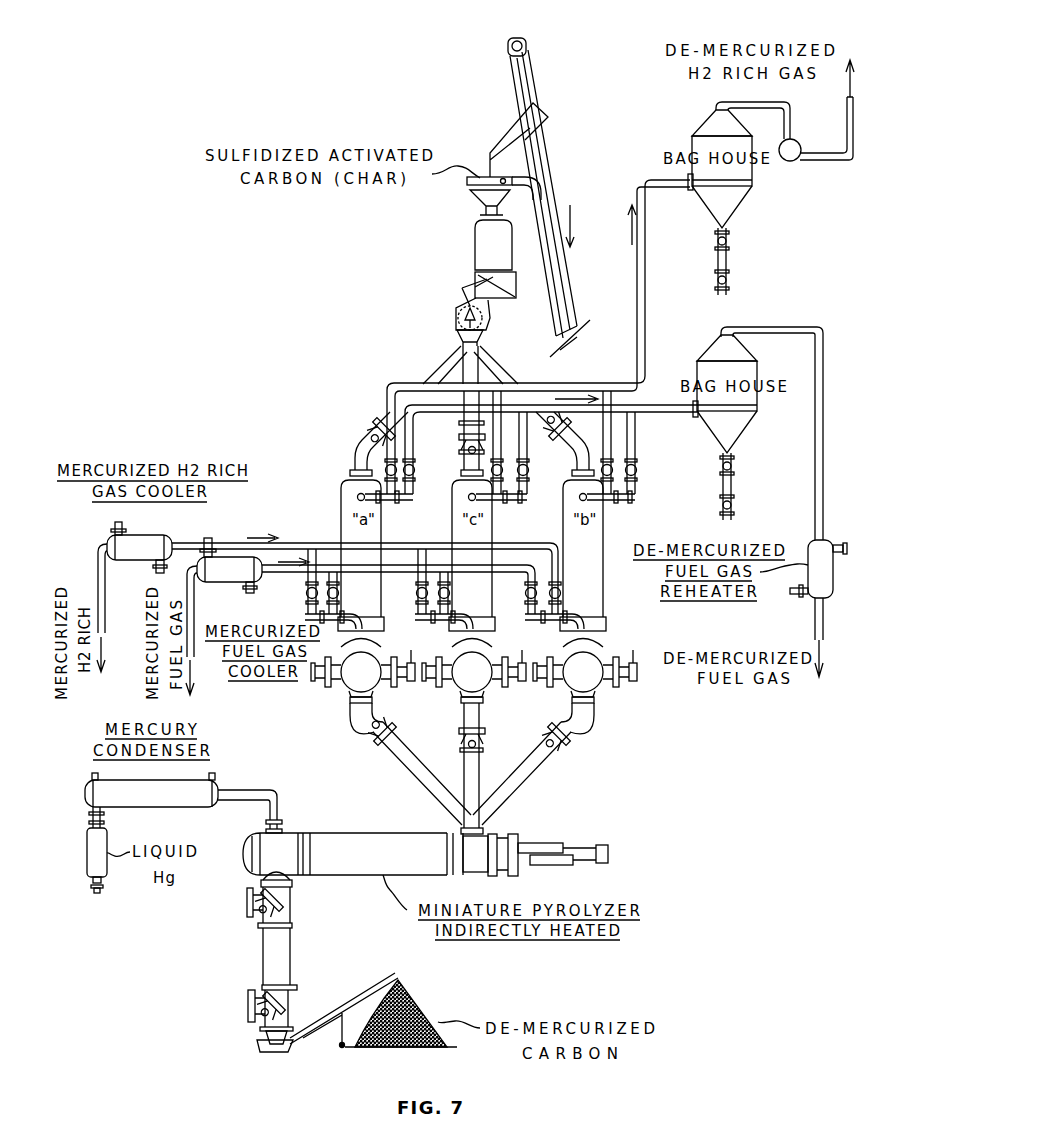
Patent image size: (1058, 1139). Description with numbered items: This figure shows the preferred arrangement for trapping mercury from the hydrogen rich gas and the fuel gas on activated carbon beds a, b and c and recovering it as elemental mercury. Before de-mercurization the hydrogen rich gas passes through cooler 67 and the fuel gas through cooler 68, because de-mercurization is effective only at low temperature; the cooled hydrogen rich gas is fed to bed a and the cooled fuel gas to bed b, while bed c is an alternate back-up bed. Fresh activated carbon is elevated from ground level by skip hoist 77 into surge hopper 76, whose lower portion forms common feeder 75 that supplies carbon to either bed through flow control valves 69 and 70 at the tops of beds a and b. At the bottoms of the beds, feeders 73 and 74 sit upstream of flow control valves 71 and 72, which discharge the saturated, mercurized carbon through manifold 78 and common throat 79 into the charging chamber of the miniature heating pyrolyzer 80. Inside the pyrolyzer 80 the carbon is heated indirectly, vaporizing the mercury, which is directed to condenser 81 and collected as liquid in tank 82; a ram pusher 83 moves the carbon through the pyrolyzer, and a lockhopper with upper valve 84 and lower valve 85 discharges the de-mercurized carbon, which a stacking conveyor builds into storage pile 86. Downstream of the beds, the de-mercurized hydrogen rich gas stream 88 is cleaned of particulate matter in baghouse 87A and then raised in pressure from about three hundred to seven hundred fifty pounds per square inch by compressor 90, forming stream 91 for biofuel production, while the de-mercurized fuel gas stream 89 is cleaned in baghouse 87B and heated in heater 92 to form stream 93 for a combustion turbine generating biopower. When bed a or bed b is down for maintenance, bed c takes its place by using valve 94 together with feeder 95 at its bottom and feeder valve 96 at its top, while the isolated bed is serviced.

The cooler 67 is at (107, 541).
The cooler 68 is at (203, 582).
The flow control valve 69 is at (364, 432).
The flow control valve 70 is at (552, 448).
The flow control valve 71 is at (380, 748).
The flow control valve 72 is at (566, 742).
The feeder 73 is at (350, 682).
The feeder 74 is at (590, 681).
The common feeder 75 is at (457, 319).
The surge hopper 76 is at (475, 242).
The skip hoist 77 is at (540, 133).
The manifold 78 is at (480, 788).
The common throat 79 is at (480, 810).
The miniature heating pyrolyzer 80 is at (385, 862).
The condenser 81 is at (221, 782).
The tank 82 is at (87, 862).
The ram pusher 83 is at (560, 843).
The upper valve 84 is at (292, 900).
The lower valve 85 is at (263, 1028).
The storage pile 86 is at (408, 992).
The baghouse 87A is at (740, 208).
The baghouse 87B is at (745, 430).
The de-mercurized H2 rich gas stream 88 is at (581, 383).
The de-mercurized fuel gas stream 89 is at (650, 414).
The compressor 90 is at (783, 162).
The stream 91 is at (853, 140).
The heater 92 is at (835, 580).
The stream 93 is at (830, 625).
The valve 94 is at (462, 733).
The feeder 95 is at (480, 681).
The feeder valve 96 is at (462, 441).